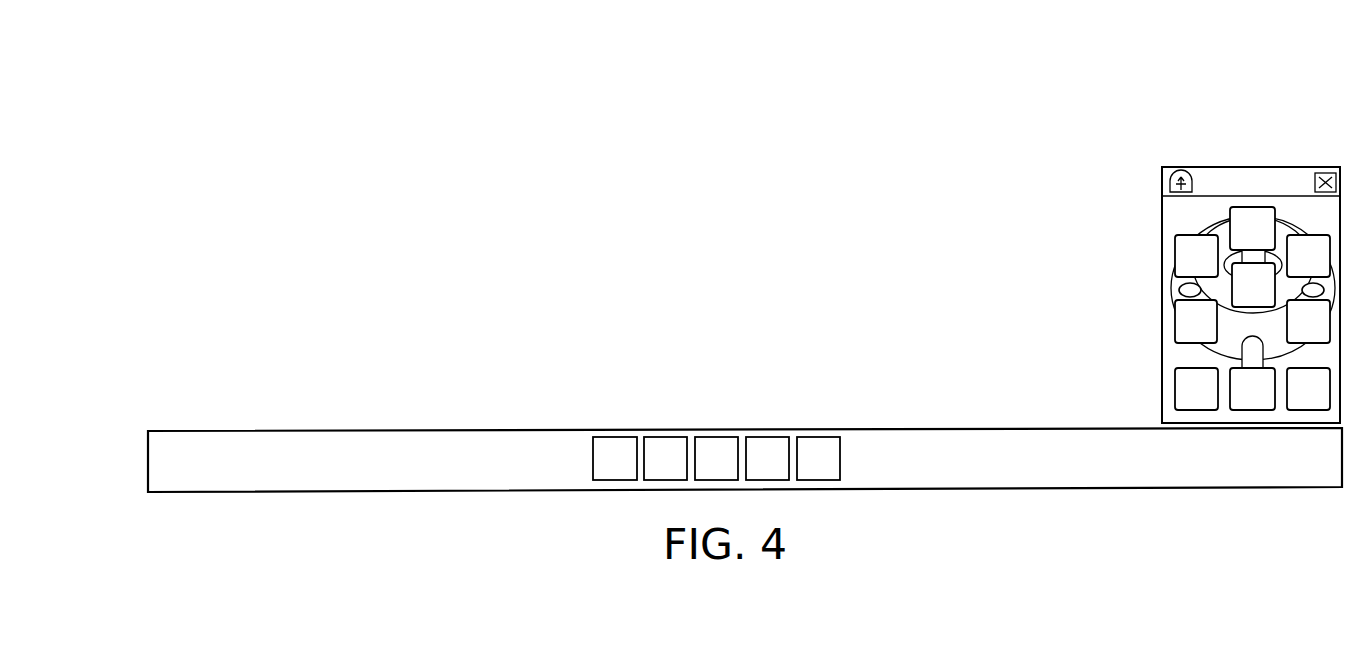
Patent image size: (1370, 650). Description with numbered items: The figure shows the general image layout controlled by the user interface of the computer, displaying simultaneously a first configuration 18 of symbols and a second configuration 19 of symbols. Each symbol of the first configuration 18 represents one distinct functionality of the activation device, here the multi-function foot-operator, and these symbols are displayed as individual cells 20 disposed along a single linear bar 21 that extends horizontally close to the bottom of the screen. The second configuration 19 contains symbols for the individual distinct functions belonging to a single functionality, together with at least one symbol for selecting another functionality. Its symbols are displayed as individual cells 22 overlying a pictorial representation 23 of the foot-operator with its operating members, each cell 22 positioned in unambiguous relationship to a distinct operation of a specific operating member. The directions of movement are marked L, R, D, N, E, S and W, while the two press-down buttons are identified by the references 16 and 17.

The press-down button 16 is at (1196, 321).
The press-down button 17 is at (1308, 321).
The first configuration of symbols 18 is at (764, 313).
The second configuration of symbols 19 is at (1266, 127).
The individual cells 20 is at (616, 447).
The linear bar 21 is at (495, 446).
The individual cells 22 is at (1178, 236).
The pictorial representation 23 is at (1179, 289).